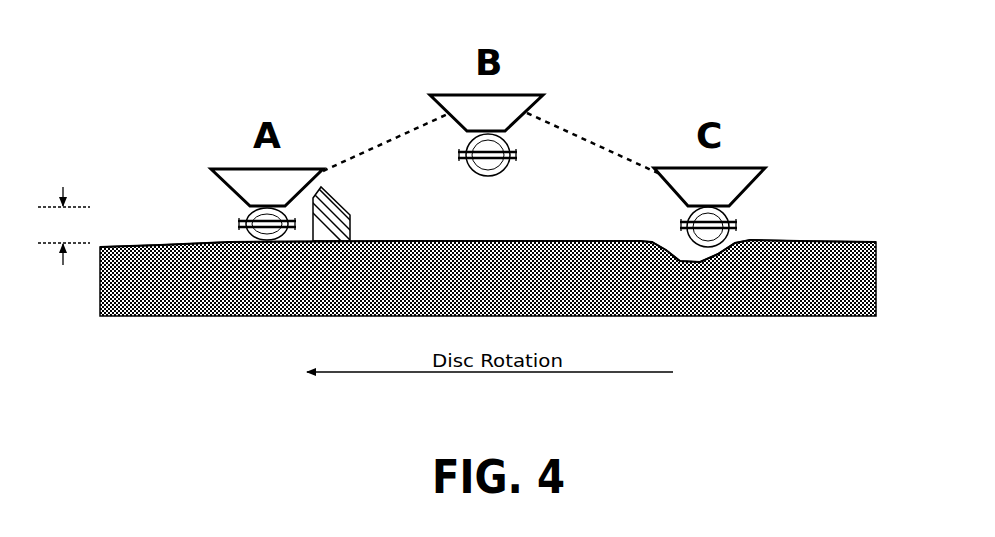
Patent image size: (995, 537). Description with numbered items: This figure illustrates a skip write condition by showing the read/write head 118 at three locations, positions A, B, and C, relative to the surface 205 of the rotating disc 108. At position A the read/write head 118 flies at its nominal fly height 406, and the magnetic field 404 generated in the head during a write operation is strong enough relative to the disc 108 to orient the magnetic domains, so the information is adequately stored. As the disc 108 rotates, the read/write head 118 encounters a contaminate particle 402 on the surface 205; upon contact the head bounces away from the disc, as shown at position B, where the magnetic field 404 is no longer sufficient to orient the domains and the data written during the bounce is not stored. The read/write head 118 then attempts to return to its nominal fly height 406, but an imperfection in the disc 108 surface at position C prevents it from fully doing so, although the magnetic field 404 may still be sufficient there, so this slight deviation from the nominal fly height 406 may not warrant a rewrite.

The disc 108 is at (793, 316).
The read/write head 118 is at (247, 169).
The surface 205 is at (817, 243).
The contaminate particle 402 is at (350, 233).
The magnetic field 404 is at (228, 228).
The nominal fly height 406 is at (64, 226).